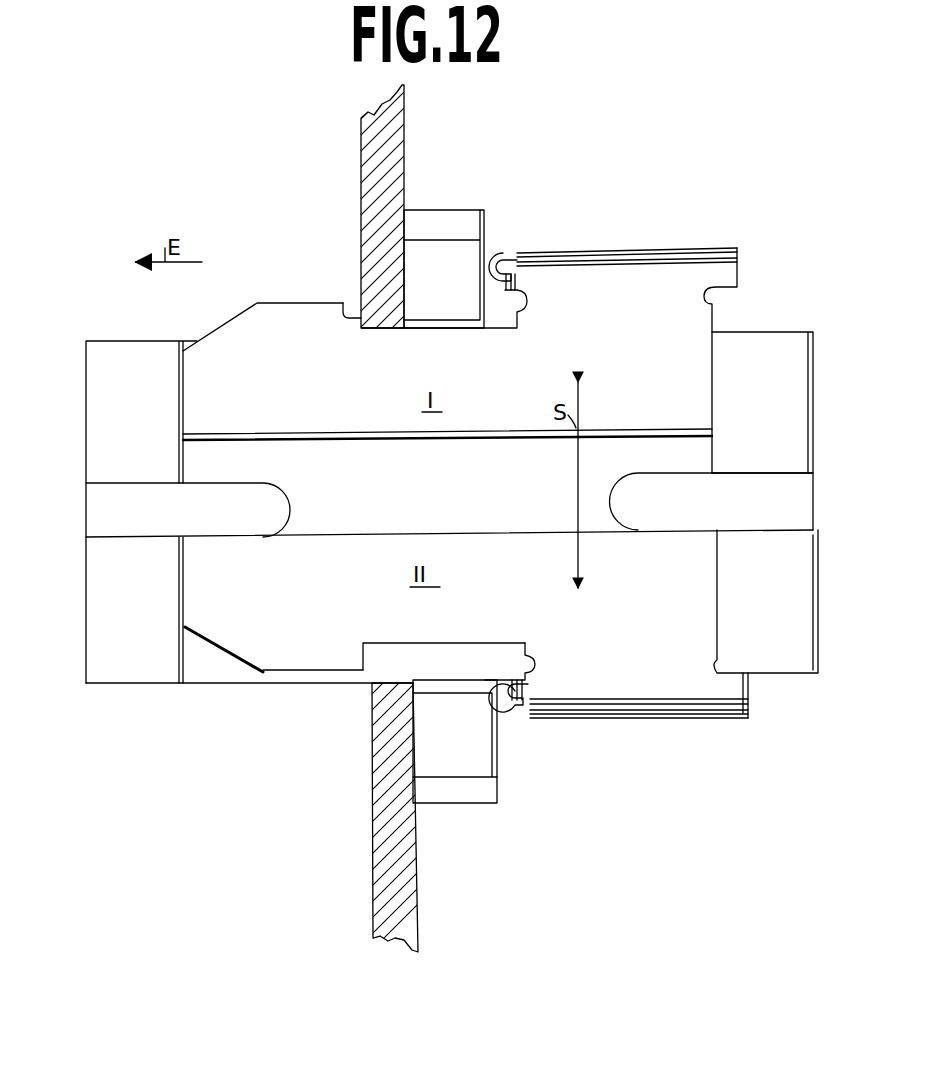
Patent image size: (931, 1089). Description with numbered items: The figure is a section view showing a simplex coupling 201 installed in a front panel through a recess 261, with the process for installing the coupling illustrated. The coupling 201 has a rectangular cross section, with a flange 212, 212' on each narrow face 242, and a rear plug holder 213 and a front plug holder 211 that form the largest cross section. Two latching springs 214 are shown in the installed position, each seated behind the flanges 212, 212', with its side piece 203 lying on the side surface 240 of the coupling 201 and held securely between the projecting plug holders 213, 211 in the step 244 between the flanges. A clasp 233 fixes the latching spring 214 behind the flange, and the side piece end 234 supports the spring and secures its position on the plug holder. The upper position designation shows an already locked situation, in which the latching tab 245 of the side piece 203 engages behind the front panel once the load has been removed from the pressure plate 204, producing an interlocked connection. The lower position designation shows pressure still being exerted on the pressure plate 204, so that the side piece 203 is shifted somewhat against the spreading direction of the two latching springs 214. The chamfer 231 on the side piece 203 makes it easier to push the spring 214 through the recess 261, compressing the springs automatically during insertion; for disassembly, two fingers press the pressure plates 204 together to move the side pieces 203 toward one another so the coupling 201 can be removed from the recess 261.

The simplex coupling 201 is at (271, 690).
The side piece 203 is at (205, 389).
The pressure plate 204 is at (582, 246).
The front plug holder 211 is at (778, 655).
The flange 212 is at (444, 247).
The flange 212' is at (455, 770).
The rear plug holder 213 is at (110, 660).
The latching spring 214 is at (627, 238).
The chamfer 231 is at (228, 320).
The clasp 233 is at (469, 334).
The side piece end 234 is at (712, 393).
The side surface 240 is at (435, 507).
The narrow face 242 is at (208, 684).
The step 244 is at (458, 327).
The latching tab 245 is at (355, 318).
The recess 261 is at (380, 687).